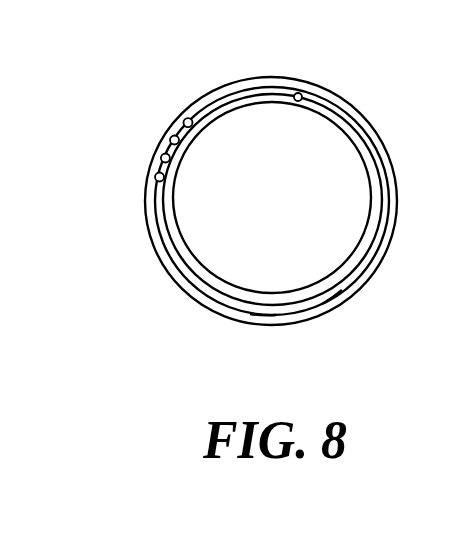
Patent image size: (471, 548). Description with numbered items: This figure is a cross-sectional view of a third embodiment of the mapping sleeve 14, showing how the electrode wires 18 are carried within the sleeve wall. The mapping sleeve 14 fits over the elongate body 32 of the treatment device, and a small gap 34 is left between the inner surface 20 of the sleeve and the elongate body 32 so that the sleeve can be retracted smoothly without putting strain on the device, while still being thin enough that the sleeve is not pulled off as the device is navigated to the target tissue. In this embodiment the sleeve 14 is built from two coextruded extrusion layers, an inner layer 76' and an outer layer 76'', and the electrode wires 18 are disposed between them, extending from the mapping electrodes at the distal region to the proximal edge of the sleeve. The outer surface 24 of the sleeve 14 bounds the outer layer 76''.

The mapping sleeve 14 is at (193, 283).
The electrode wire 18 is at (184, 120).
The inner surface 20 is at (300, 93).
The outer surface 24 is at (362, 108).
The elongate body 32 is at (328, 228).
The gap 34 is at (237, 105).
The inner layer 76' is at (266, 348).
The outer layer 76'' is at (356, 323).